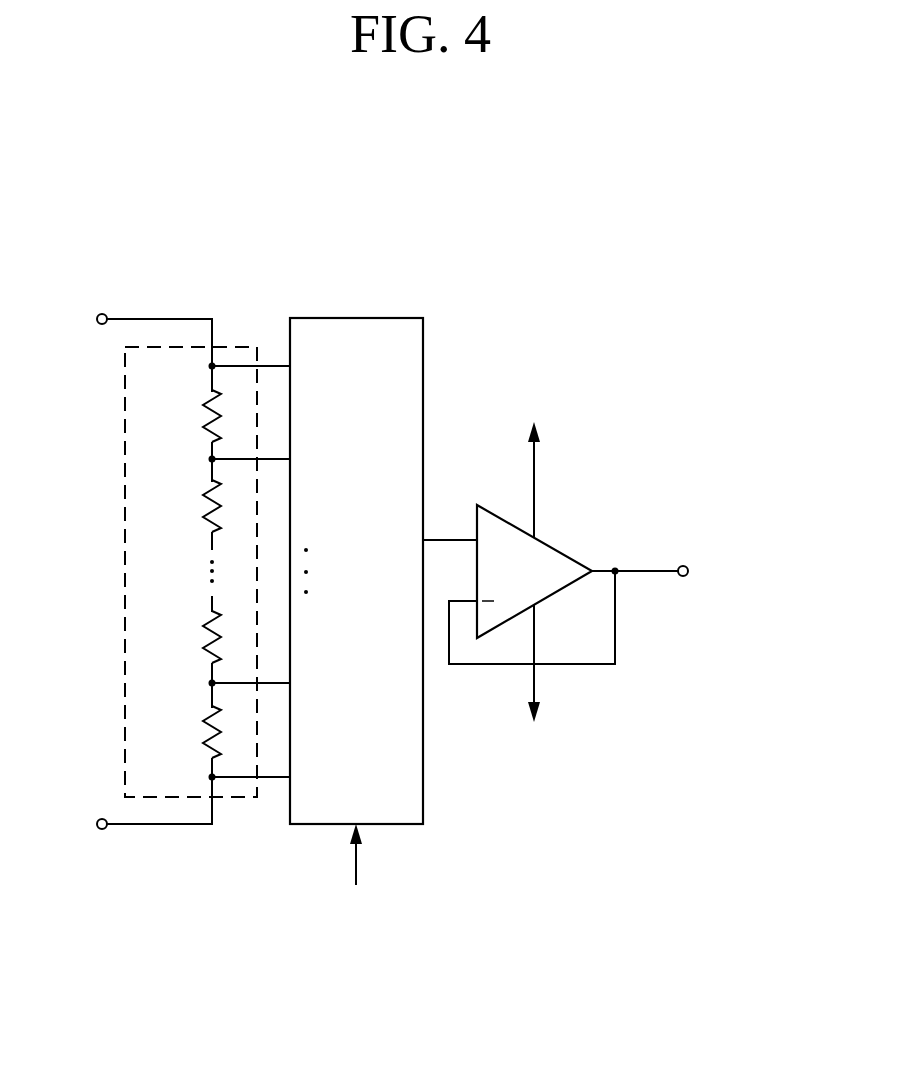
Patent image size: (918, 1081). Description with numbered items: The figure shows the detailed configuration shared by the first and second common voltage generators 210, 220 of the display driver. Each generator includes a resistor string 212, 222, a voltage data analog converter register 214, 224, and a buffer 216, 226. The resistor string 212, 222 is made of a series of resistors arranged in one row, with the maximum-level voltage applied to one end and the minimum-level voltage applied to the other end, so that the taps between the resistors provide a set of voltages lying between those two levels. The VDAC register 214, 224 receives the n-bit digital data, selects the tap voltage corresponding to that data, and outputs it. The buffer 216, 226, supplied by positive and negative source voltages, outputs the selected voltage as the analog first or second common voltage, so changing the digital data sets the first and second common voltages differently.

The first common voltage generator 210 is at (434, 543).
The second common voltage generator 220 is at (197, 192).
The resistor string 212 is at (208, 533).
The resistor string 222 is at (238, 346).
The voltage data analog converter (VDAC) register 214 is at (364, 585).
The voltage data analog converter (VDAC) register 224 is at (384, 318).
The buffer 216 is at (630, 569).
The buffer 226 is at (565, 553).